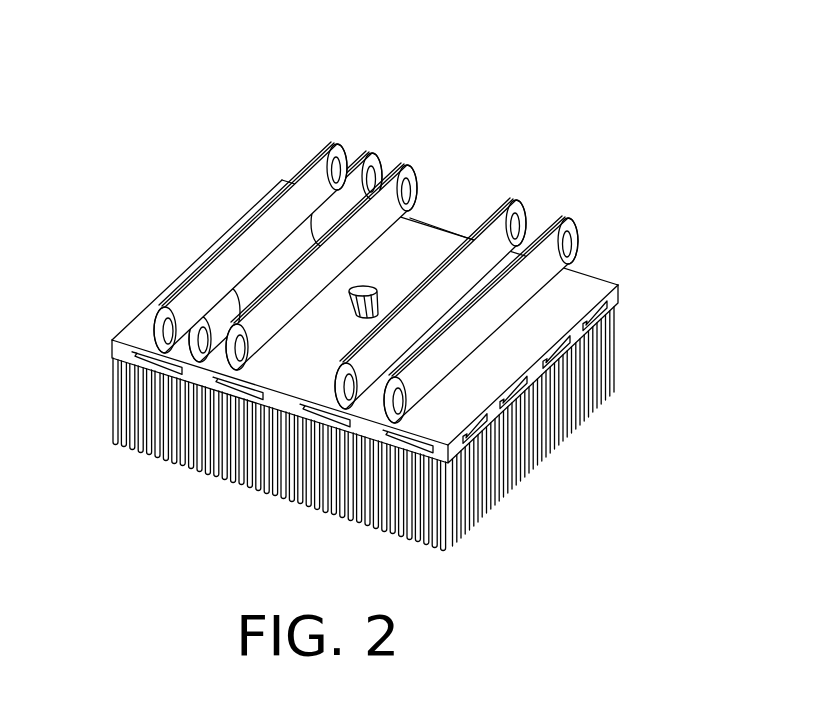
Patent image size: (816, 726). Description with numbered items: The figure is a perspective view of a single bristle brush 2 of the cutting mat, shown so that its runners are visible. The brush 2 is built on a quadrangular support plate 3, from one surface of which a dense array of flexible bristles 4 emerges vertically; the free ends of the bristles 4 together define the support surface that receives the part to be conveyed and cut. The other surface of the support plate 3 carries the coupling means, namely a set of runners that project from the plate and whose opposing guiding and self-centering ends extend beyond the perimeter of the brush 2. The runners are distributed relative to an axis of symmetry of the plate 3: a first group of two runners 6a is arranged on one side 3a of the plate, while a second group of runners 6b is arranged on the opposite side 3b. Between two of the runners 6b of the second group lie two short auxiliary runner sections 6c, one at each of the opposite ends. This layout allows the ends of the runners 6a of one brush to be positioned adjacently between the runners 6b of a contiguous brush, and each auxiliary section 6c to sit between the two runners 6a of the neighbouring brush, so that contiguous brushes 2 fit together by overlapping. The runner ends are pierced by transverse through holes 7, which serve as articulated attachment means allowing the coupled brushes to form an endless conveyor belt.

The bristle brush 2 is at (374, 317).
The support plate 3 is at (395, 301).
The side of the plate 3a is at (578, 292).
The opposite side of the plate 3b is at (261, 208).
The flexible bristles 4 is at (120, 392).
The first group of runners 6a is at (570, 227).
The second group of runners 6b is at (317, 180).
The auxiliary runner section 6c is at (378, 162).
The transverse through holes 7 is at (240, 347).